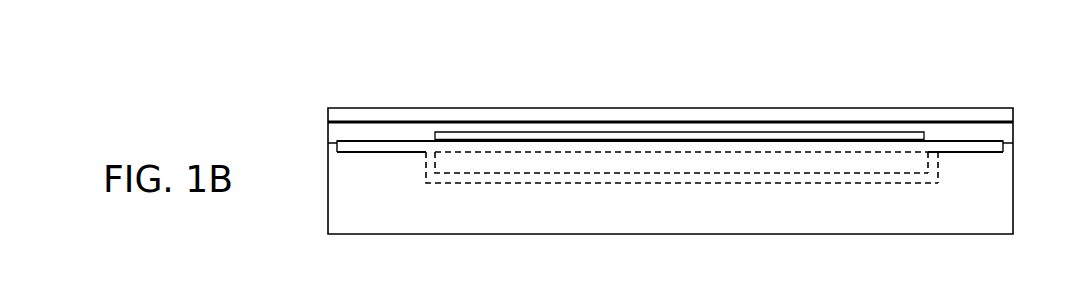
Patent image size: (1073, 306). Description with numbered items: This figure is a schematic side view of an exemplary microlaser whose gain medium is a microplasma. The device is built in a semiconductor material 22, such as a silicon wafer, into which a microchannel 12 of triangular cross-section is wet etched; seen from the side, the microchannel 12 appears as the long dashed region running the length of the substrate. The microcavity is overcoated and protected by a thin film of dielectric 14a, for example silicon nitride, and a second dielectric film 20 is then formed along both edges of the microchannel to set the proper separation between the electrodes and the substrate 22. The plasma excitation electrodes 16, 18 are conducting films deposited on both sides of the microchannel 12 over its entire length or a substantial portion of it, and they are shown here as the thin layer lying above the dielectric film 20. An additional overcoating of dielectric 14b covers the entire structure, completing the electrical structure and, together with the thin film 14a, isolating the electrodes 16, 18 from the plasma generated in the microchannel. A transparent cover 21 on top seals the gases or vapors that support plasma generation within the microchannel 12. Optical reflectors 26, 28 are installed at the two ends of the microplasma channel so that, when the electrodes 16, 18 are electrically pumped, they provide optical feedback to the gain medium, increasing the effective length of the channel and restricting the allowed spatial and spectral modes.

The microchannel 12 is at (657, 154).
The thin film of dielectric 14a is at (637, 77).
The additional overcoating of dielectric 14b is at (342, 132).
The plasma excitation electrode 16 is at (679, 87).
The plasma excitation electrode 18 is at (680, 133).
The second dielectric film 20 is at (333, 146).
The transparent cover 21 is at (960, 107).
The semiconductor material 22 is at (412, 223).
The optical reflector 26 is at (948, 161).
The optical reflector 28 is at (422, 159).